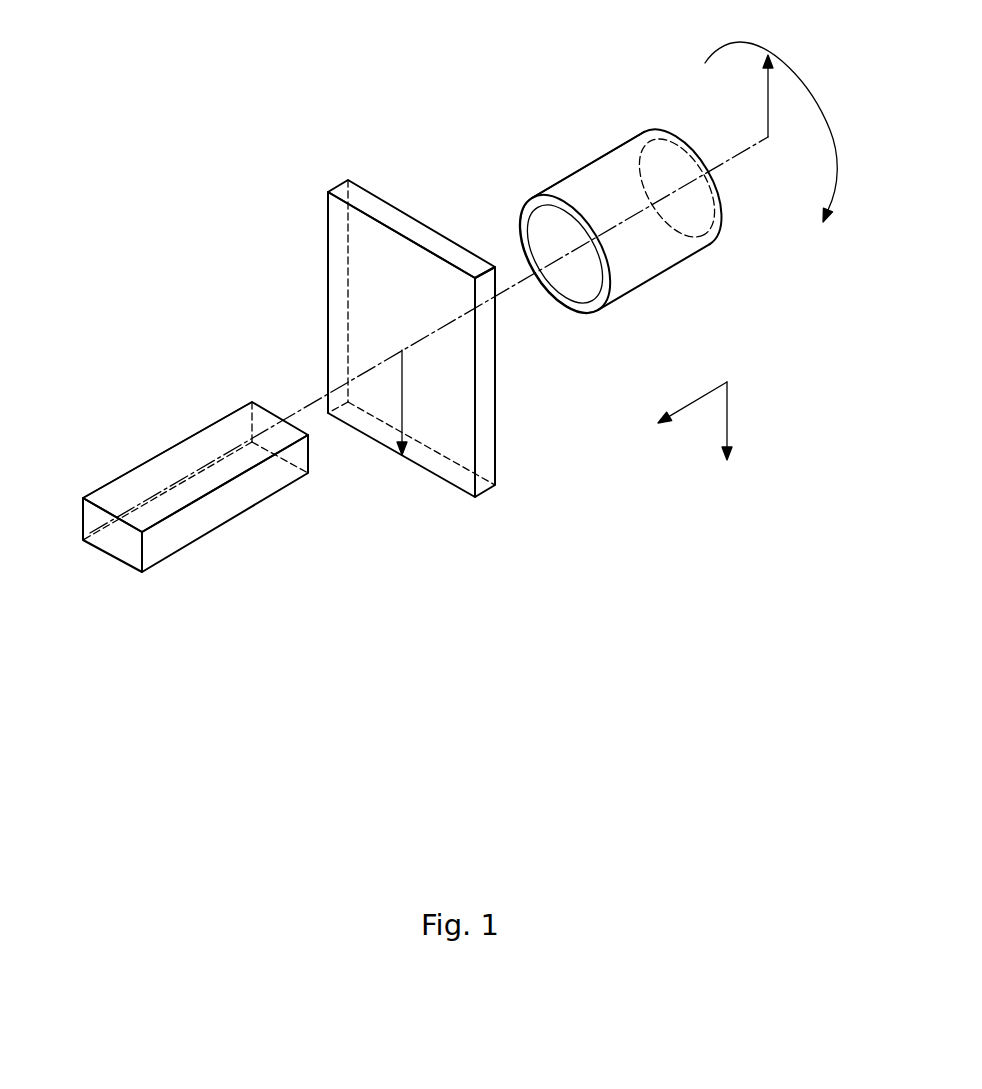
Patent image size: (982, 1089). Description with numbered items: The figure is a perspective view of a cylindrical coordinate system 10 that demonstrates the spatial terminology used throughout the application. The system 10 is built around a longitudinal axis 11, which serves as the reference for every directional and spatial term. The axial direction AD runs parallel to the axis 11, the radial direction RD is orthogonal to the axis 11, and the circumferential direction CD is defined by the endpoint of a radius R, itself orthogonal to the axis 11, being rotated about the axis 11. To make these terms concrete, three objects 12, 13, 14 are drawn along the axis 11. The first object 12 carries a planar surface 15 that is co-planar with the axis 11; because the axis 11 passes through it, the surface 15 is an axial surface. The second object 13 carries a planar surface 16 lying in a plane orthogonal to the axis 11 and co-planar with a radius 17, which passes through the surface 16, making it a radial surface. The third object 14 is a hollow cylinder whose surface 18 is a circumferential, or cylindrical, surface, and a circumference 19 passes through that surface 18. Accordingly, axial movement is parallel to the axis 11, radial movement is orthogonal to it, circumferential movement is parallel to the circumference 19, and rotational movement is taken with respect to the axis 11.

The cylindrical coordinate system 10 is at (273, 217).
The longitudinal axis 11 is at (708, 165).
The object 12 is at (173, 574).
The object 13 is at (520, 498).
The object 14 is at (660, 296).
The axial surface 15 is at (160, 468).
The radial surface 16 is at (343, 300).
The radius 17 is at (402, 395).
The circumferential surface 18 is at (590, 162).
The circumference 19 is at (523, 223).
The radius R is at (768, 90).
The circumferential direction CD is at (803, 82).
The axial direction AD is at (693, 402).
The radial direction RD is at (727, 417).